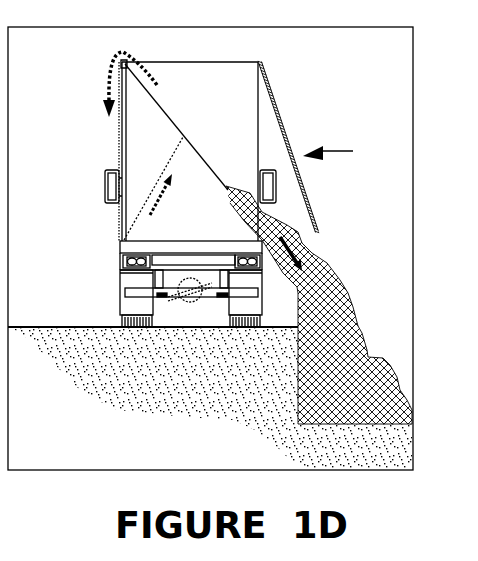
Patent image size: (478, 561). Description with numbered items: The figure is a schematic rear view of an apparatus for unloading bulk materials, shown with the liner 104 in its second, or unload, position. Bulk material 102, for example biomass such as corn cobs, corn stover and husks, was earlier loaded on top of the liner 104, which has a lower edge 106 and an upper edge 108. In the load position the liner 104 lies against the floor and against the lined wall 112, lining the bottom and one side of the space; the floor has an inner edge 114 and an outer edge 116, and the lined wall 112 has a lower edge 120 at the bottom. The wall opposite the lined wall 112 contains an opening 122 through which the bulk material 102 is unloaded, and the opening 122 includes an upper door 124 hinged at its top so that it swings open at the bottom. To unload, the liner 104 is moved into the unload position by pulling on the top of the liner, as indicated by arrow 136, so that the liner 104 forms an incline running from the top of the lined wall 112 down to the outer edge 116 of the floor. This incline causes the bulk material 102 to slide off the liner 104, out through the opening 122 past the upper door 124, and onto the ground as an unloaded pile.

The bulk material 102 is at (355, 376).
The liner 104 is at (185, 134).
The lower edge 106 is at (255, 235).
The upper edge 108 is at (127, 66).
The lined wall 112 is at (118, 147).
The inner edge 114 is at (124, 243).
The outer edge 116 is at (250, 243).
The lower edge 120 is at (120, 225).
The opening 122 is at (347, 151).
The upper door 124 is at (269, 84).
The arrow 136 is at (128, 52).